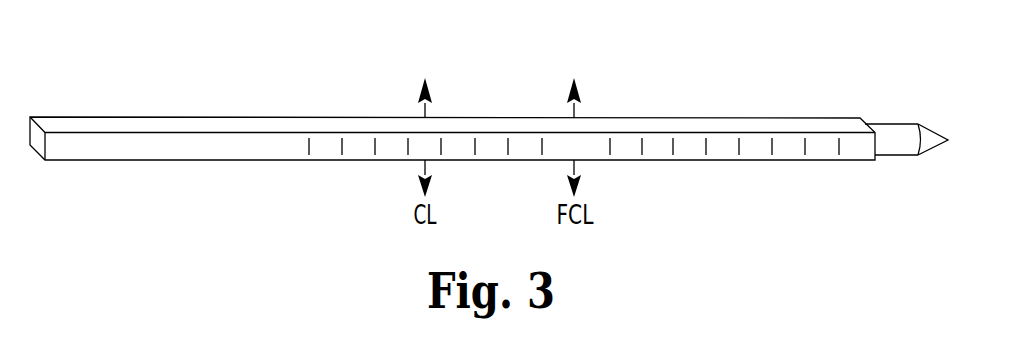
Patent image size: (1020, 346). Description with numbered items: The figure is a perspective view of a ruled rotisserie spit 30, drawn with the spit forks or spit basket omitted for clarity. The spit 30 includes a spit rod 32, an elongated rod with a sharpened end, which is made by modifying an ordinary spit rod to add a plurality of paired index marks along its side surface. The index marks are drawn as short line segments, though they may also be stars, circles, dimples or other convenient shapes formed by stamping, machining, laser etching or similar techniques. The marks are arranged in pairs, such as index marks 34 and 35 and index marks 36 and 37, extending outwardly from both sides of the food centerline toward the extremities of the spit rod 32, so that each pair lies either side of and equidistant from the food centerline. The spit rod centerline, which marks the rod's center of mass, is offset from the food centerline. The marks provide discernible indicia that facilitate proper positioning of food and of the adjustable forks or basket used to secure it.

The rotisserie spit 30 is at (841, 79).
The spit rod 32 is at (833, 160).
The index mark 34 is at (542, 137).
The index mark 35 is at (610, 137).
The index mark 36 is at (508, 137).
The index mark 37 is at (642, 137).